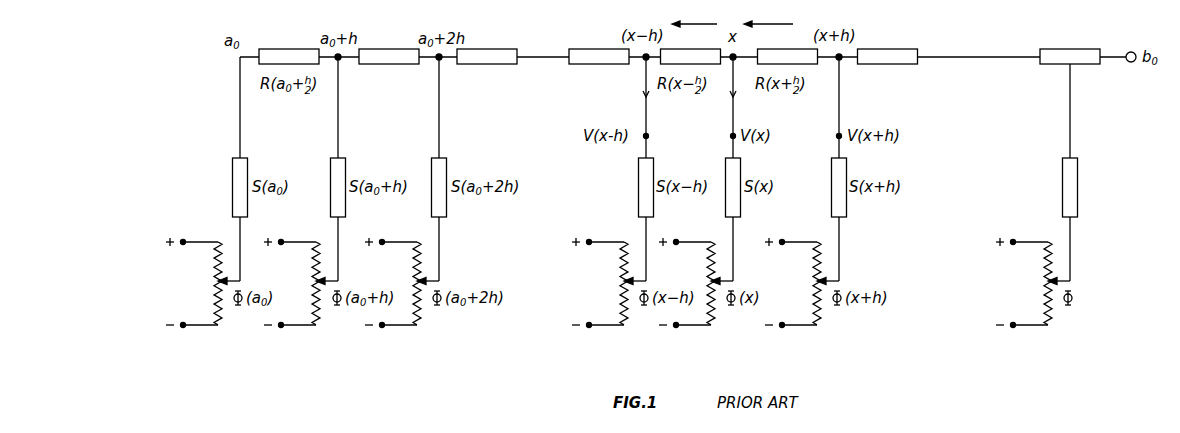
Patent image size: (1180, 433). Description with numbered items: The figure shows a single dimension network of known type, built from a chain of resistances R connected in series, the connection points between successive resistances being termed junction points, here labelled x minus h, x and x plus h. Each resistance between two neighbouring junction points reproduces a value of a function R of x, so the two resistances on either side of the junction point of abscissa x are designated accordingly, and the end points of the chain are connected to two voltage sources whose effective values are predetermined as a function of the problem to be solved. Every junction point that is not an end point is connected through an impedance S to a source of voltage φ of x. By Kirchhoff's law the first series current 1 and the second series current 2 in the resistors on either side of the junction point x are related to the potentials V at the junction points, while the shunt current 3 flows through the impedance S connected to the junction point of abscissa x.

The current i1 1 is at (694, 15).
The current i2 2 is at (768, 15).
The current i3 3 is at (726, 107).